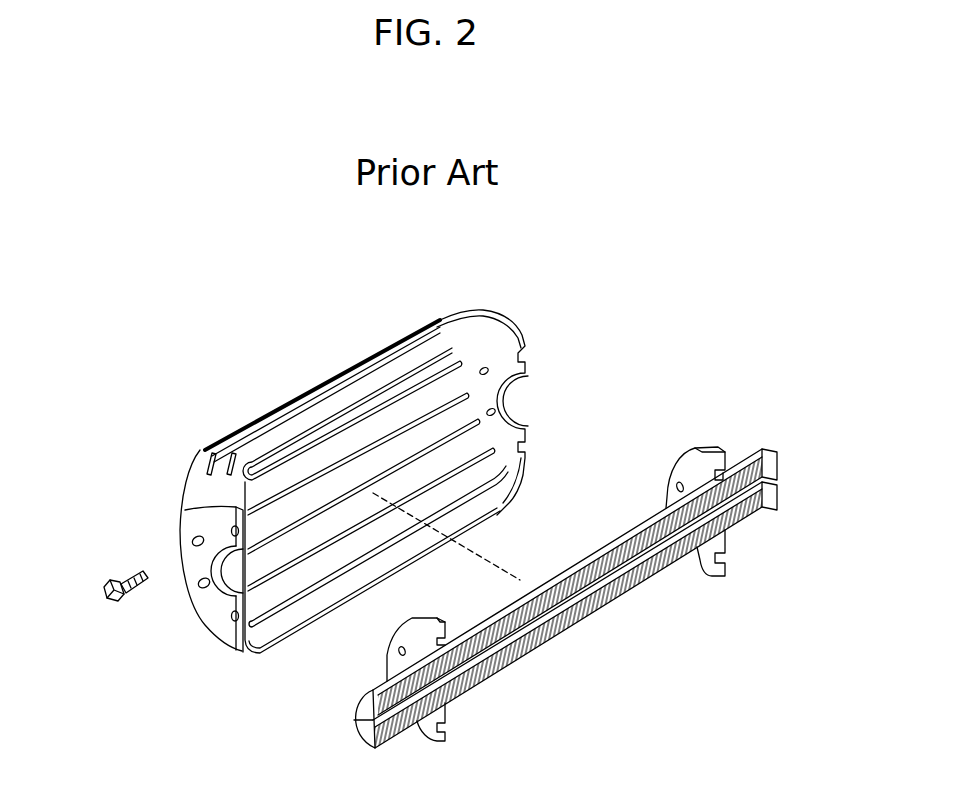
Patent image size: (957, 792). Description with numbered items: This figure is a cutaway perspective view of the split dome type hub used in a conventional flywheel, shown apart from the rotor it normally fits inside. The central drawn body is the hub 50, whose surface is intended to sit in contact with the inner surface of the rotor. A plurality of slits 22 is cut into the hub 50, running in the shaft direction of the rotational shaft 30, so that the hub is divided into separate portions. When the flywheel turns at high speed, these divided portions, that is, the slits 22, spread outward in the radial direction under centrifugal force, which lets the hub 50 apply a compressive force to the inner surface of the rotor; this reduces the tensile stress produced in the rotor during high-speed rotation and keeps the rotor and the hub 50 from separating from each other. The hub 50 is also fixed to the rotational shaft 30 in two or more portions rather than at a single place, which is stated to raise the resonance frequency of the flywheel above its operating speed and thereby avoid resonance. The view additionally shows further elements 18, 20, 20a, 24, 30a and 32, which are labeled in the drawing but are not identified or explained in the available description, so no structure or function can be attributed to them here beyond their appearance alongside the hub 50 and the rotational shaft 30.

The bolt 18 is at (130, 572).
The lamp housing 20 is at (378, 350).
The end mounting plate 20a is at (200, 519).
The slits 22 is at (265, 428).
The mounting holes 24 is at (200, 590).
The rotational shaft 30 is at (640, 526).
The mounting bracket 30a is at (696, 461).
The bracket hole 32 is at (677, 481).
The hub 50 is at (316, 368).